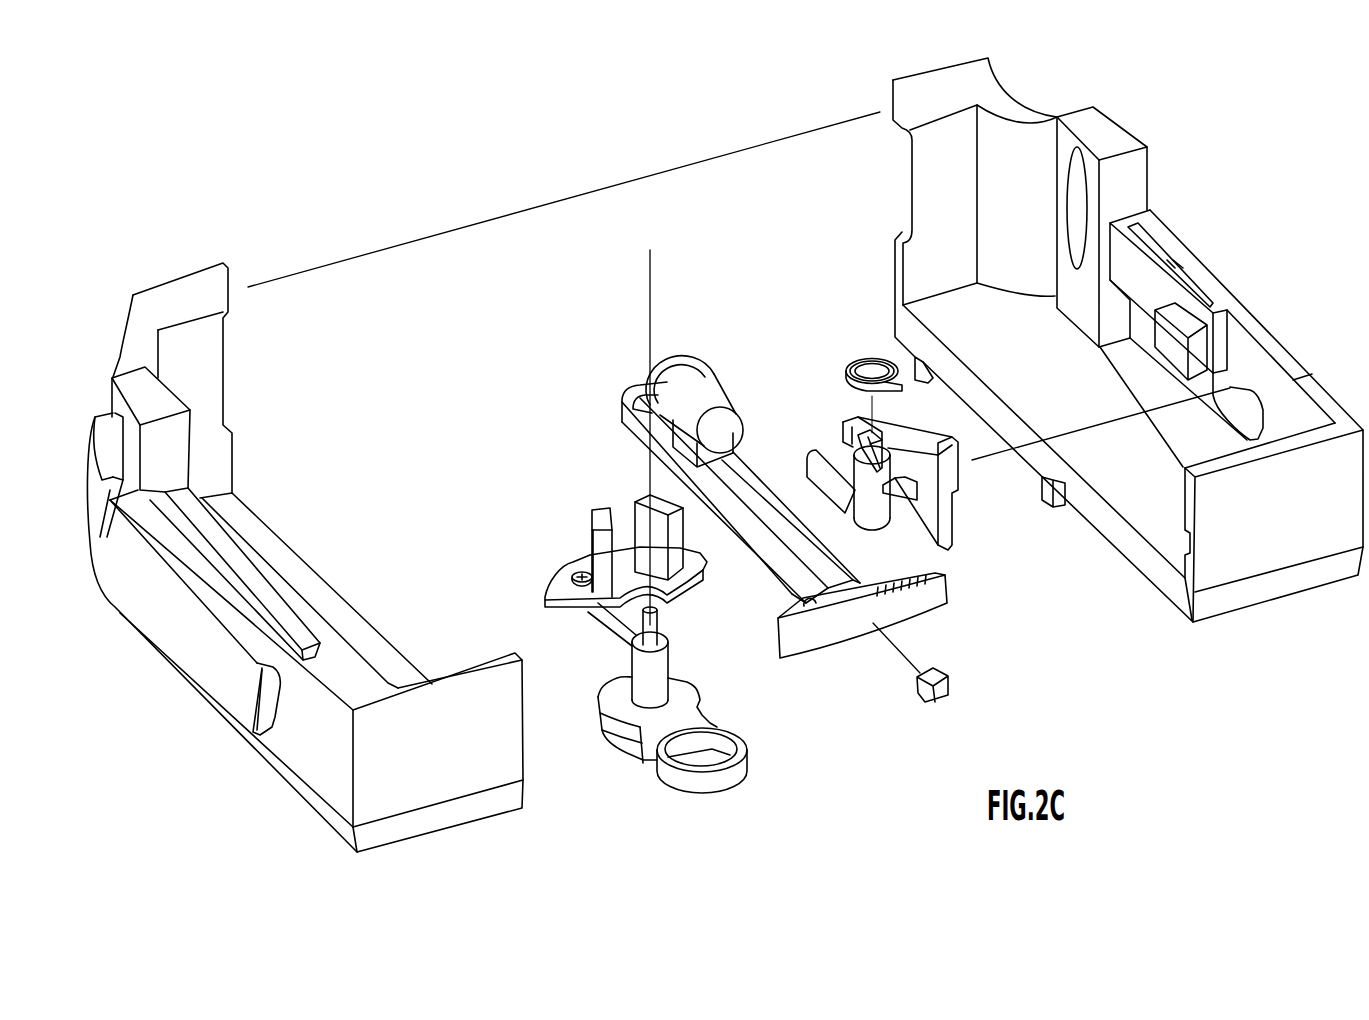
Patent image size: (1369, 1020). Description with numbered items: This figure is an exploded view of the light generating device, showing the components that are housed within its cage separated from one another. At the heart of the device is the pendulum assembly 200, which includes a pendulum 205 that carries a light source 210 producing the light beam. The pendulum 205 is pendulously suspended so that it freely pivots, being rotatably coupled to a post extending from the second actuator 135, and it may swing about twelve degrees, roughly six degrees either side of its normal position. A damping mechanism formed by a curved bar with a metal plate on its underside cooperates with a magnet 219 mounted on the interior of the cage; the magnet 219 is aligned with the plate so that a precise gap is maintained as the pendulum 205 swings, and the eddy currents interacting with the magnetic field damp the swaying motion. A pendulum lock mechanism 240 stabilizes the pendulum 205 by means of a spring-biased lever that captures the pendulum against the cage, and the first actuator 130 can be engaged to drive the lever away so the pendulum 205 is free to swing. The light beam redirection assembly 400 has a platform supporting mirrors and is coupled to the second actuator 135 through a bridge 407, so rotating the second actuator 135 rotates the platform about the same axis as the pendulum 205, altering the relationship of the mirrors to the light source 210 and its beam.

The first actuator 130 is at (950, 473).
The second actuator 135 is at (615, 758).
The pendulum assembly 200 is at (852, 656).
The pendulum 205 is at (772, 493).
The light source 210 is at (707, 400).
The magnet 219 is at (942, 695).
The pendulum lock mechanism 240 is at (885, 530).
The light beam redirection assembly 400 is at (578, 544).
The bridge 407 is at (605, 630).